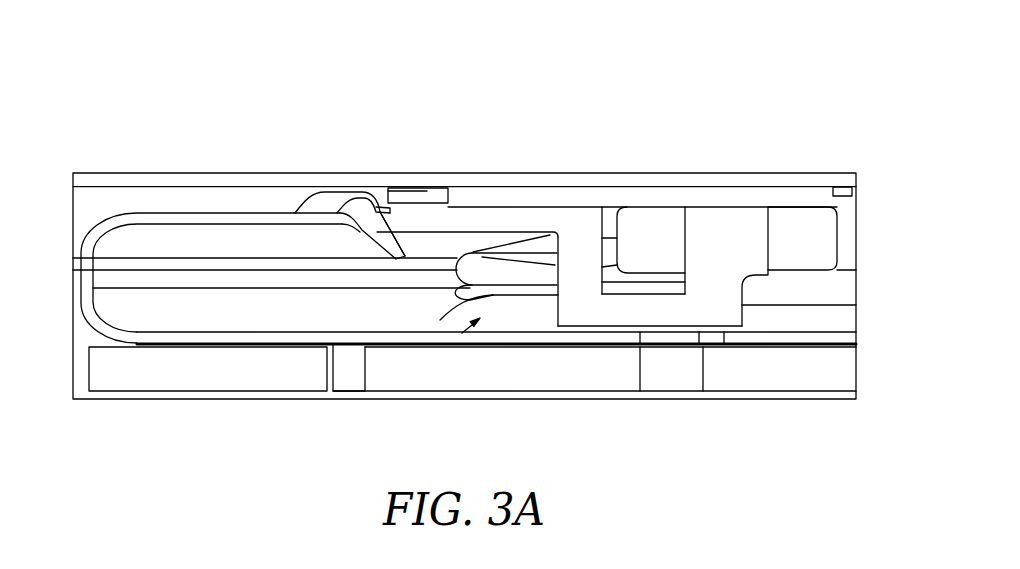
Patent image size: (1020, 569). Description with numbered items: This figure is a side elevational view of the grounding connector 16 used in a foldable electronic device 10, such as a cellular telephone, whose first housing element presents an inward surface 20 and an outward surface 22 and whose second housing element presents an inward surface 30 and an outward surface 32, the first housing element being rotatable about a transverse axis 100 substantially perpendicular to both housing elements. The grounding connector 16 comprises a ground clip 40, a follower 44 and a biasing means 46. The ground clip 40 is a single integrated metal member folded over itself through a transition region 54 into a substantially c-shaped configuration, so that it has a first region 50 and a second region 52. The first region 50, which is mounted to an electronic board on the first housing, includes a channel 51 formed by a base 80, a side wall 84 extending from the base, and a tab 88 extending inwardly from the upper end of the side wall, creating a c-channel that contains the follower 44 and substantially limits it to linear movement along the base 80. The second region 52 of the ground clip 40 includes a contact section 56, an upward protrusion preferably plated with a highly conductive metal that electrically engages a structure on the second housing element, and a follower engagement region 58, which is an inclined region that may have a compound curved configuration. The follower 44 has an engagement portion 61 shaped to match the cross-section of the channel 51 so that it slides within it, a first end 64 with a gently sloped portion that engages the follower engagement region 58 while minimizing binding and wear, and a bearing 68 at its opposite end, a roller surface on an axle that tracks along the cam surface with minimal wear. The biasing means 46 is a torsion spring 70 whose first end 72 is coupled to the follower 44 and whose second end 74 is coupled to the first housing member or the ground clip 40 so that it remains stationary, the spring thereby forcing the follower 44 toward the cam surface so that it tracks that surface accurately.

The foldable electronic device 10 is at (818, 56).
The grounding connector 16 is at (97, 323).
The inward surface 20 is at (252, 288).
The outward surface 22 is at (169, 398).
The inward surface 30 is at (173, 280).
The outward surface 32 is at (356, 185).
The ground clip 40 is at (85, 313).
The follower 44 is at (535, 218).
The biasing means 46 is at (547, 233).
The first region 50 is at (340, 333).
The channel 51 is at (461, 305).
The second region 52 is at (148, 217).
The transition region 54 is at (92, 247).
The contact section 56 is at (397, 208).
The follower engagement region 58 is at (384, 190).
The engagement portion 61 is at (585, 315).
The first end 64 is at (403, 212).
The bearing 68 is at (797, 217).
The torsion spring 70 is at (613, 242).
The first end 72 is at (613, 242).
The second end 74 is at (440, 320).
The base 80 is at (617, 333).
The side wall 84 is at (503, 310).
The tab 88 is at (542, 288).
The transverse axis 100 is at (672, 380).